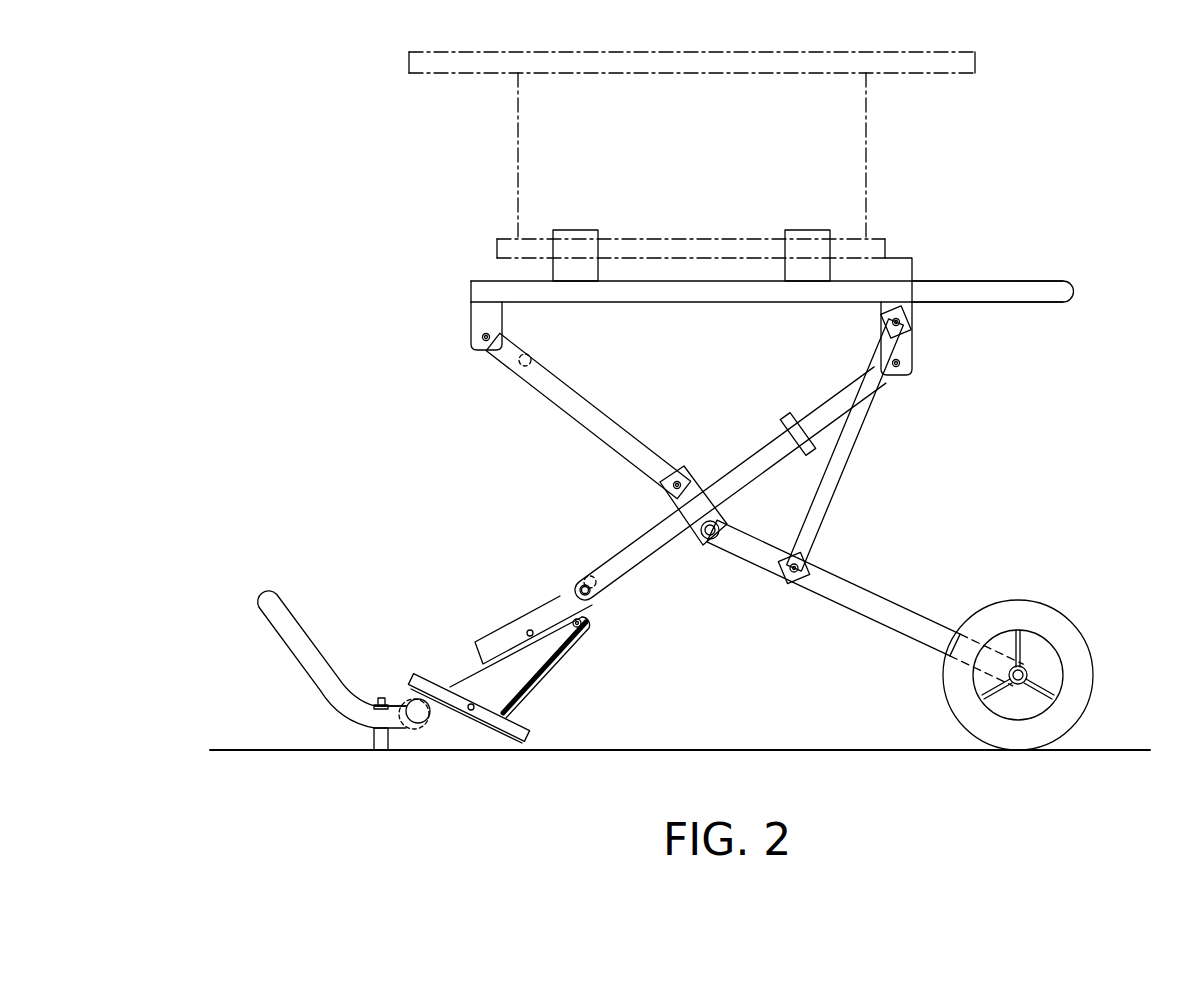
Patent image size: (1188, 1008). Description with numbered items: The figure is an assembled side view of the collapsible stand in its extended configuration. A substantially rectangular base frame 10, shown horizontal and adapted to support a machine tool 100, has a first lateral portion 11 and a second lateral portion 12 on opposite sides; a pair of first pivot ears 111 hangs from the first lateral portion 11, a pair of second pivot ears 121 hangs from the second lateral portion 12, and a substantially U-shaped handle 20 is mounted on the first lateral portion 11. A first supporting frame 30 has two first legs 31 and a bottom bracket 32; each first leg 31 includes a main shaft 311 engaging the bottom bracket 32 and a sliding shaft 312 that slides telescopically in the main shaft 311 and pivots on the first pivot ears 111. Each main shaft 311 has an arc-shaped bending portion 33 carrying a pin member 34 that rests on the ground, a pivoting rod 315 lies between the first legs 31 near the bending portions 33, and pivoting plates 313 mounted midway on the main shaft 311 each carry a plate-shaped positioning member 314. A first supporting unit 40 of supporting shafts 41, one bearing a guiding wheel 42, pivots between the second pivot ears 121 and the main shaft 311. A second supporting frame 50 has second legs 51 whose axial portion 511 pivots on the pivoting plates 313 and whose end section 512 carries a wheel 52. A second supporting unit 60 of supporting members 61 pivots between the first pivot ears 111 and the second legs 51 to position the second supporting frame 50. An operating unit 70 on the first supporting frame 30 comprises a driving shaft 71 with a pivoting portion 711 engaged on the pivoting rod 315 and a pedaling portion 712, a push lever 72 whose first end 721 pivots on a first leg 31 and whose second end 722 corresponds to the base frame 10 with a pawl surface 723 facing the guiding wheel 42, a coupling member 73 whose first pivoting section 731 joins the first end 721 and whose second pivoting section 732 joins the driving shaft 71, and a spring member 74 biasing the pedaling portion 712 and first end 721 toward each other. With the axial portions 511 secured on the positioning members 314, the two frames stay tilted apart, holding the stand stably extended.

The machine tool 100 is at (879, 130).
The base frame 10 is at (675, 283).
The first lateral portion 11 is at (675, 283).
The first pivot ears 111 is at (905, 362).
The second lateral portion 12 is at (475, 292).
The second pivot ears 121 is at (473, 323).
The handle 20 is at (1031, 271).
The first supporting frame 30 is at (633, 583).
The first legs 31 is at (610, 590).
The main shaft 311 is at (668, 552).
The sliding shaft 312 is at (826, 402).
The pivoting plates 313 is at (710, 548).
The positioning member 314 is at (743, 528).
The pivoting rod 315 is at (410, 745).
The bottom bracket 32 is at (275, 723).
The bending portion 33 is at (375, 725).
The pin members 34 is at (378, 748).
The first supporting unit 40 is at (544, 408).
The supporting shafts 41 is at (572, 412).
The guiding wheel 42 is at (531, 352).
The second supporting frame 50 is at (944, 635).
The second legs 51 is at (908, 630).
The axial portion 511 is at (725, 548).
The end section 512 is at (1030, 672).
The wheels 52 is at (1078, 697).
The second supporting unit 60 is at (879, 445).
The supporting members 61 is at (862, 412).
The operating unit 70 is at (494, 659).
The driving shaft 71 is at (478, 715).
The pivoting portion 711 is at (413, 700).
The pedaling portion 712 is at (490, 722).
The push lever 72 is at (518, 561).
The first end 721 is at (598, 570).
The second end 722 is at (475, 645).
The pawl surface 723 is at (515, 632).
The coupling member 73 is at (501, 657).
The first pivoting section 731 is at (572, 595).
The second pivoting section 732 is at (455, 725).
The spring member 74 is at (540, 705).